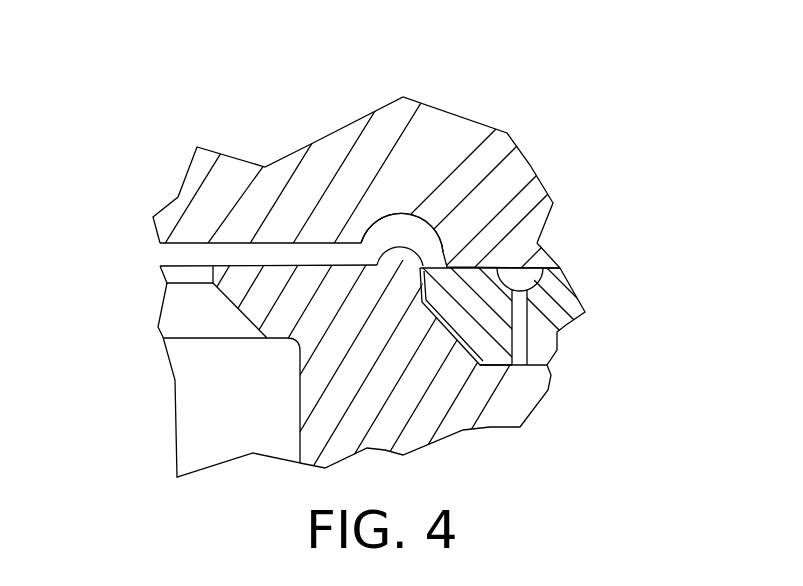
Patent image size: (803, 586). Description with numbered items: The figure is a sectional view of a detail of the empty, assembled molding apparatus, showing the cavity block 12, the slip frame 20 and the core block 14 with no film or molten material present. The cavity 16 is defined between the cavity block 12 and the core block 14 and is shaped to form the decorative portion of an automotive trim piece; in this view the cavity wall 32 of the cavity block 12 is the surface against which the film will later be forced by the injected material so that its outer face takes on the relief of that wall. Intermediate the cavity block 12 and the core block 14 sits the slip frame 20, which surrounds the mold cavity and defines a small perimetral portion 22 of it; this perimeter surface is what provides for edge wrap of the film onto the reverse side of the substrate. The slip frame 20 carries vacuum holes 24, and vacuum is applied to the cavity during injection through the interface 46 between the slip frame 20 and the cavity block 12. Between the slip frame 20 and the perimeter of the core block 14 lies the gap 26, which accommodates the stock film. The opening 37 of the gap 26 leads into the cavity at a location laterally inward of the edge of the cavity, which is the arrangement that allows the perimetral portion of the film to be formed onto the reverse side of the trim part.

The cavity block 12 is at (348, 158).
The core block 14 is at (317, 367).
The cavity 16 is at (177, 258).
The slip frame 20 is at (563, 295).
The perimetral portion 22 is at (460, 240).
The vacuum holes 24 is at (518, 337).
The gap 26 is at (490, 367).
The cavity wall 32 is at (177, 248).
The opening 37 is at (445, 257).
The interface 46 is at (547, 258).